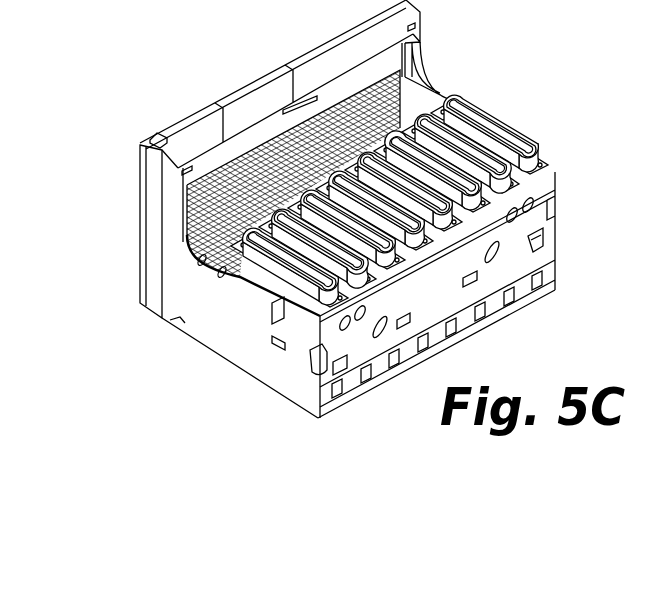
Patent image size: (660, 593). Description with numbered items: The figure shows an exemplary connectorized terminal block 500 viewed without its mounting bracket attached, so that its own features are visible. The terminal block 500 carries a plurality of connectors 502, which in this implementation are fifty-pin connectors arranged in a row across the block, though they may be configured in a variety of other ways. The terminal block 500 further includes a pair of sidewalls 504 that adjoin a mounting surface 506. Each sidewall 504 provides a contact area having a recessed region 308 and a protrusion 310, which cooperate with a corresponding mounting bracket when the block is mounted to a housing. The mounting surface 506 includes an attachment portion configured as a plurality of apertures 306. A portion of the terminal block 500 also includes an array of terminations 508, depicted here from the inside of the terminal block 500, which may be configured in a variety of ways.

The connectorized terminal block 500 is at (137, 94).
The connectors 502 is at (493, 127).
The sidewalls 504 is at (202, 295).
The mounting surface 506 is at (433, 293).
The terminations 508 is at (167, 284).
The apertures 306 is at (533, 242).
The recessed region 308 is at (293, 332).
The protrusion 310 is at (270, 317).